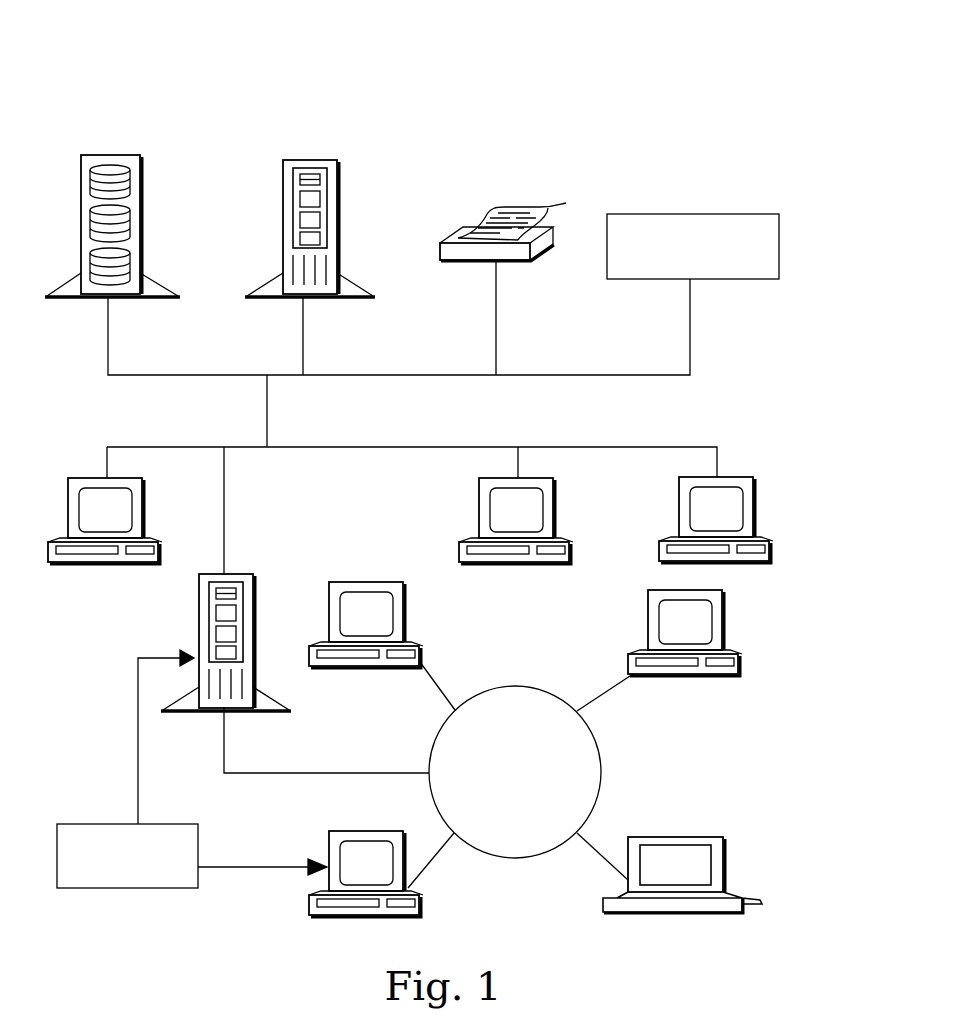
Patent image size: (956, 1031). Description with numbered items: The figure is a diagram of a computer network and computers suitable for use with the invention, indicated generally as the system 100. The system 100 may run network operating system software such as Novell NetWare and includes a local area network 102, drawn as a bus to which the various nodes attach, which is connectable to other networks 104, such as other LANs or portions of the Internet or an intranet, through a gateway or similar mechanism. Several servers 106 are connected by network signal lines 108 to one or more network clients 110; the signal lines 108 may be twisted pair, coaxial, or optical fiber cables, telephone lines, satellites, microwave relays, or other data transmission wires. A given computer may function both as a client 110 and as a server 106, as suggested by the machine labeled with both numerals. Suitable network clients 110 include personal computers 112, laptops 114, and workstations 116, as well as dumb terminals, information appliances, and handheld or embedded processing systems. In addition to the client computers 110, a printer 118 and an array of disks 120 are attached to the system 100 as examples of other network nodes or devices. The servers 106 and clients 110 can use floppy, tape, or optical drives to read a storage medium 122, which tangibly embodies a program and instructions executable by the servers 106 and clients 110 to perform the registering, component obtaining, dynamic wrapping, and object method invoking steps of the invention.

The computer network system 100 is at (253, 60).
The local area network 102 is at (647, 447).
The other networks 104 is at (677, 214).
The server 106 is at (305, 157).
The network signal line 108 is at (224, 503).
The network client 110 is at (665, 673).
The personal computer 112 is at (405, 615).
The laptop 114 is at (652, 838).
The workstation 116 is at (733, 477).
The printer 118 is at (515, 200).
The array of disks 120 is at (108, 153).
The storage medium 122 is at (200, 845).